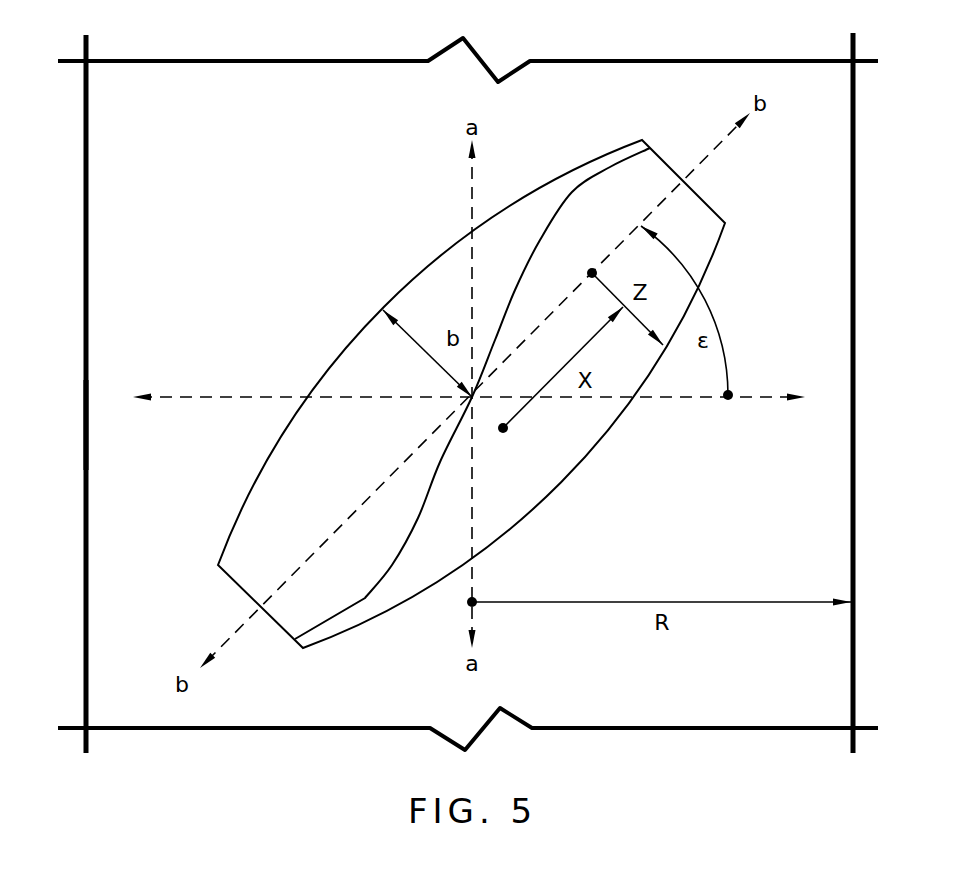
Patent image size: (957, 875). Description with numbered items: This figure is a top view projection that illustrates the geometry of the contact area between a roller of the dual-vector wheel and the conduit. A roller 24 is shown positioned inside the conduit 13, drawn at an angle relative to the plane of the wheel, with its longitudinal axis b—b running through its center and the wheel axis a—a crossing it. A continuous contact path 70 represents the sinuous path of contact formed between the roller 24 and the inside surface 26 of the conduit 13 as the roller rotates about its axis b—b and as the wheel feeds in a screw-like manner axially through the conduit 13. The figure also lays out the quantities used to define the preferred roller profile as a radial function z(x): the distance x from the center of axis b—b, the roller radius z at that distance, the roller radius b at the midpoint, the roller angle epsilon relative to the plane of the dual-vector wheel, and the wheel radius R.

The conduit 13 is at (83, 373).
The inside surface of the conduit 26 is at (89, 420).
The roller 24 is at (348, 347).
The continuous contact path 70 is at (365, 600).